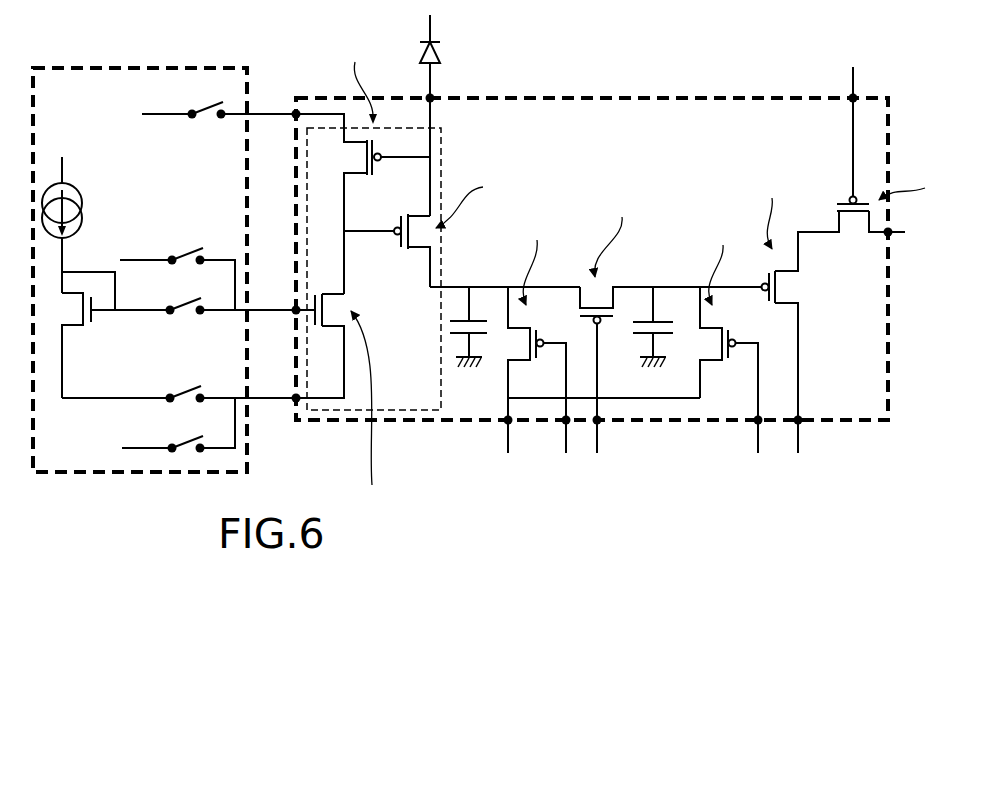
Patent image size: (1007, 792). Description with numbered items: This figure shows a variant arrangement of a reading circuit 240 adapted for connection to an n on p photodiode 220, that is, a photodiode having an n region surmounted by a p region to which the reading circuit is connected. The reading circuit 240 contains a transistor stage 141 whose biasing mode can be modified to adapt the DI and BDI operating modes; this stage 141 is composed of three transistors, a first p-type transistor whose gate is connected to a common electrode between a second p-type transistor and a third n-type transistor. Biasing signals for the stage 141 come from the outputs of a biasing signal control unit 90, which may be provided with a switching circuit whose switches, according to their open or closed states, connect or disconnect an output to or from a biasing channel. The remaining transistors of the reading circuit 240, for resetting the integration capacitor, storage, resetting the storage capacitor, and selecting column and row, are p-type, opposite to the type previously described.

The biasing signal control unit 90 is at (112, 478).
The stage 141 is at (346, 416).
The n on p photodiode 220 is at (450, 46).
The reading circuit 240 is at (623, 291).